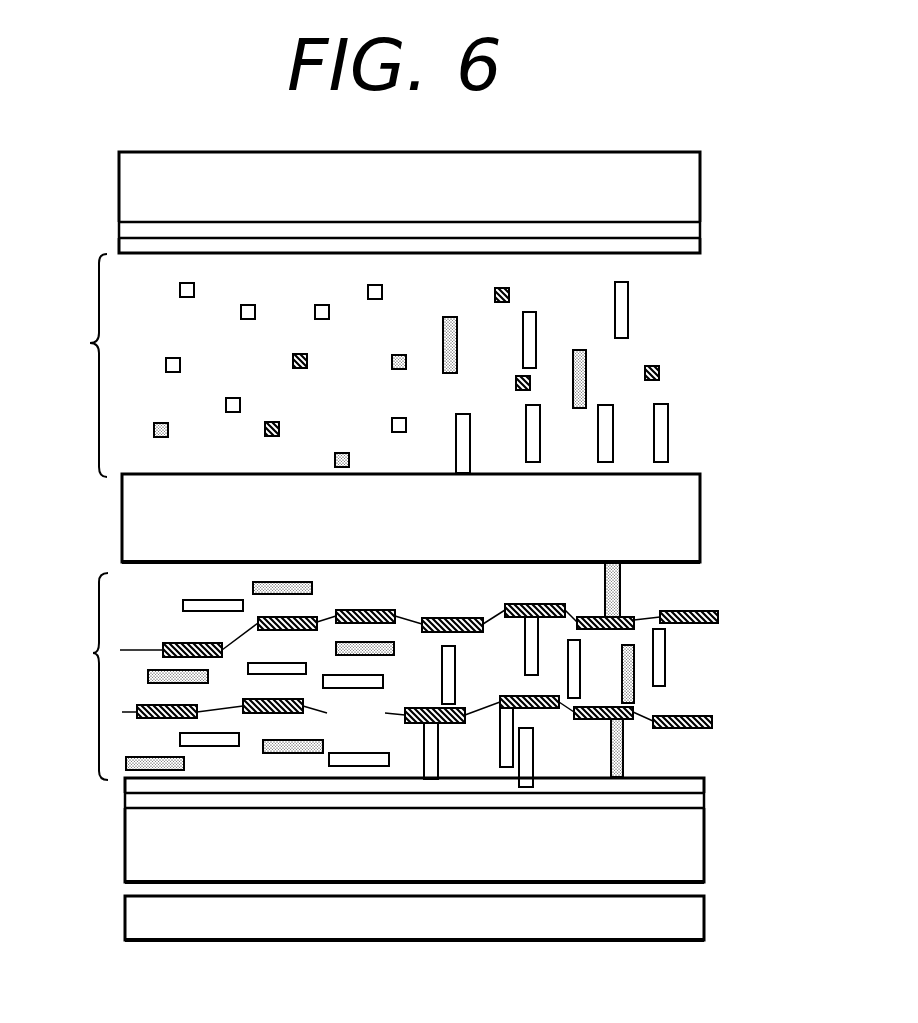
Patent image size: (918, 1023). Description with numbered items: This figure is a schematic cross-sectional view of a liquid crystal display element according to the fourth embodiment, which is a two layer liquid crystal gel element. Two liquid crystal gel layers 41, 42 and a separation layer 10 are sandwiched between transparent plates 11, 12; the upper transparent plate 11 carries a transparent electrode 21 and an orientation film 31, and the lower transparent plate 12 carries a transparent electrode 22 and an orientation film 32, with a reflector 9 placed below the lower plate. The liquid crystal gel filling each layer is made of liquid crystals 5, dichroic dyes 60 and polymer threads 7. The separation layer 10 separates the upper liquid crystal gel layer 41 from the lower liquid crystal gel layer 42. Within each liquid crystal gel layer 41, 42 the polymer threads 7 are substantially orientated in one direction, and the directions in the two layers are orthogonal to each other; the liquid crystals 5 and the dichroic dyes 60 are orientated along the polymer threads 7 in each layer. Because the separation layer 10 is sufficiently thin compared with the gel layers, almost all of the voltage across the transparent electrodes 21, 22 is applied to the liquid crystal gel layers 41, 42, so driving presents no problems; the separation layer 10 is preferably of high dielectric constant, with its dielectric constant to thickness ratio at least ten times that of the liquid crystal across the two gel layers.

The transparent plate 11 is at (690, 178).
The transparent electrode 21 is at (692, 228).
The orientation film 31 is at (693, 245).
The liquid crystal gel layer 41 is at (361, 365).
The separation layer 10 is at (125, 508).
The liquid crystal gel layer 42 is at (384, 680).
The dichroic dye 60 is at (620, 582).
The polymer thread 7 is at (718, 617).
The liquid crystal 5 is at (665, 670).
The orientation film 32 is at (704, 784).
The transparent electrode 22 is at (697, 800).
The transparent plate 12 is at (703, 858).
The reflector 9 is at (706, 917).